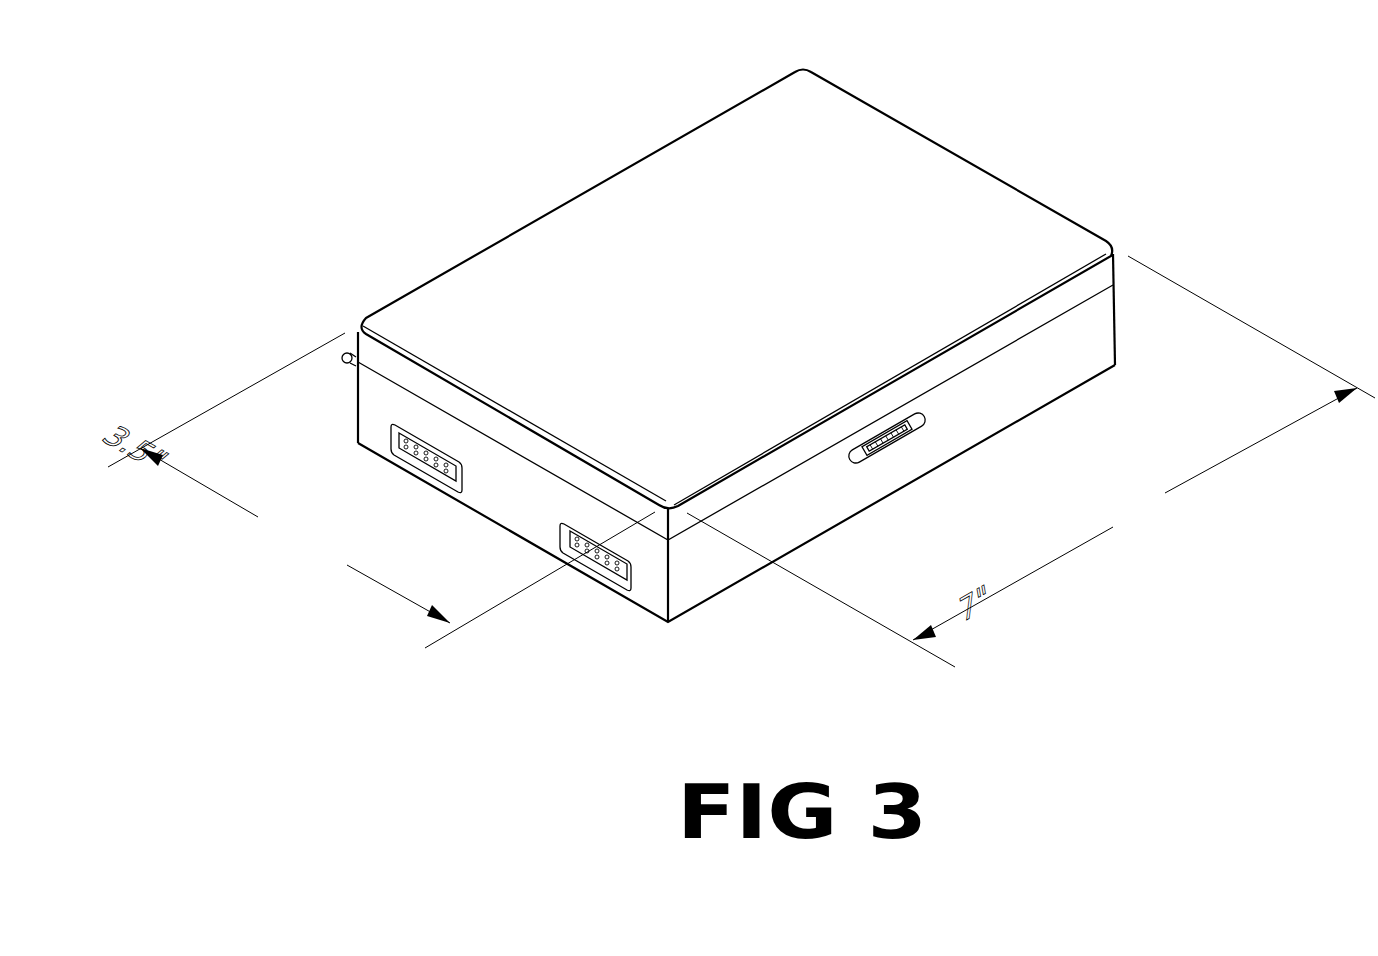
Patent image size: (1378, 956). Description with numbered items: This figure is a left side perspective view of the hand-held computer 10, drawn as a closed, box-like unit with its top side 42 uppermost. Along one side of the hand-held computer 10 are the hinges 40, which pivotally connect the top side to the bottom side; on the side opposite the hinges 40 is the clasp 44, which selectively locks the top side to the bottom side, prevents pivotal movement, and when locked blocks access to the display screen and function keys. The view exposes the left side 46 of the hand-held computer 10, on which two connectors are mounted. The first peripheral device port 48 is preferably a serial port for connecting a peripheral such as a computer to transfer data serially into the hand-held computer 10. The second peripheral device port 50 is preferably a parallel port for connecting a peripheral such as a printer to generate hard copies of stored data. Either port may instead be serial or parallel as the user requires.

The hand-held computer 10 is at (556, 155).
The hinges 40 is at (346, 366).
The top side 42 is at (648, 192).
The clasp 44 is at (898, 444).
The left side 46 is at (648, 583).
The first peripheral device port 48 is at (422, 450).
The second peripheral device port 50 is at (612, 567).